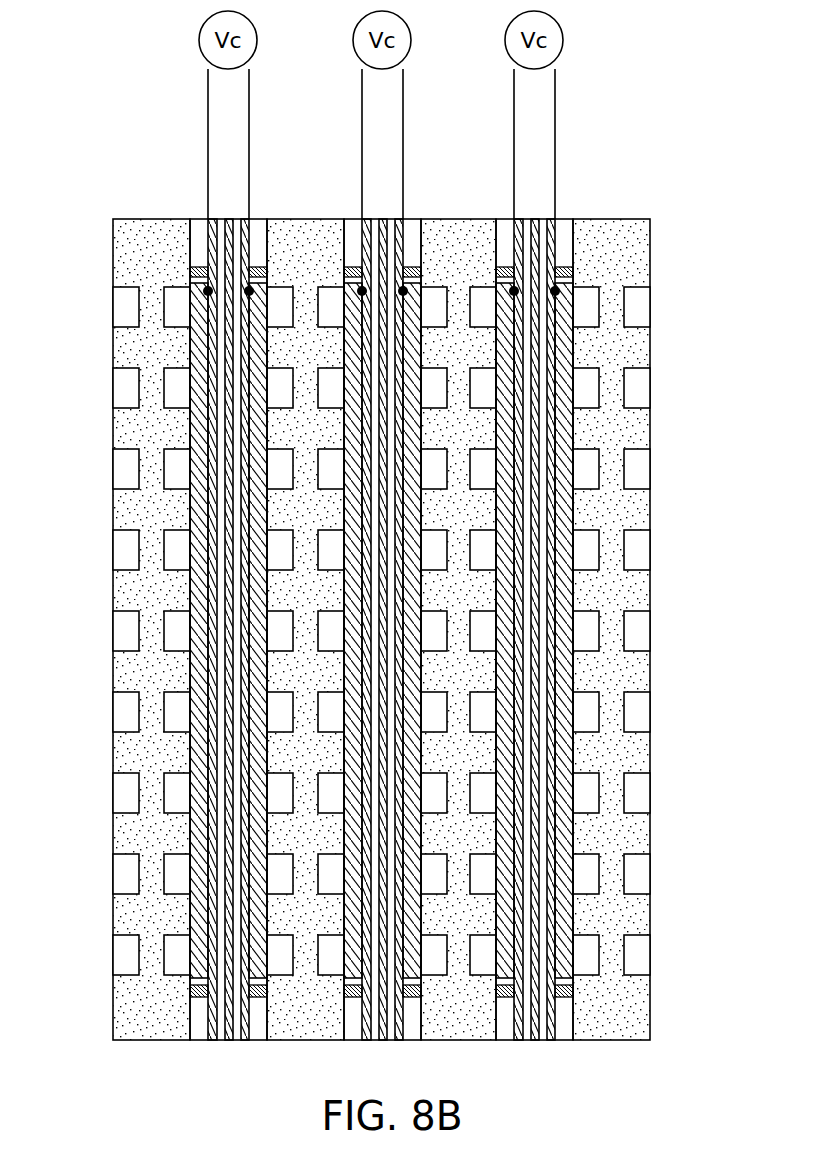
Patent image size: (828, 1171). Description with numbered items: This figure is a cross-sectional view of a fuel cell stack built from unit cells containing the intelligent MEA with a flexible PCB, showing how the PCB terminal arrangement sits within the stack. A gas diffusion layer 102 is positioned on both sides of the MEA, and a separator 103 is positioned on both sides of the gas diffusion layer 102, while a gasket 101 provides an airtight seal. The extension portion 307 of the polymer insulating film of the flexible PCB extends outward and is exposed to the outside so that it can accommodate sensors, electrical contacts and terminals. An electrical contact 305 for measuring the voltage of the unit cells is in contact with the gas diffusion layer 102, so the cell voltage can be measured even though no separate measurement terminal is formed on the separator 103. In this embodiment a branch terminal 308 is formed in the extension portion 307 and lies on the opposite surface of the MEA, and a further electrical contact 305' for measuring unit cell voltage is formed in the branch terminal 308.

The gasket 101 is at (572, 273).
The gas diffusion layer (GDL) 102 is at (565, 345).
The separator 103 is at (640, 430).
The electrical contact 305 is at (288, 304).
The electrical contact 305' is at (402, 237).
The extension portion 307 is at (210, 226).
The branch terminal 308 is at (249, 220).